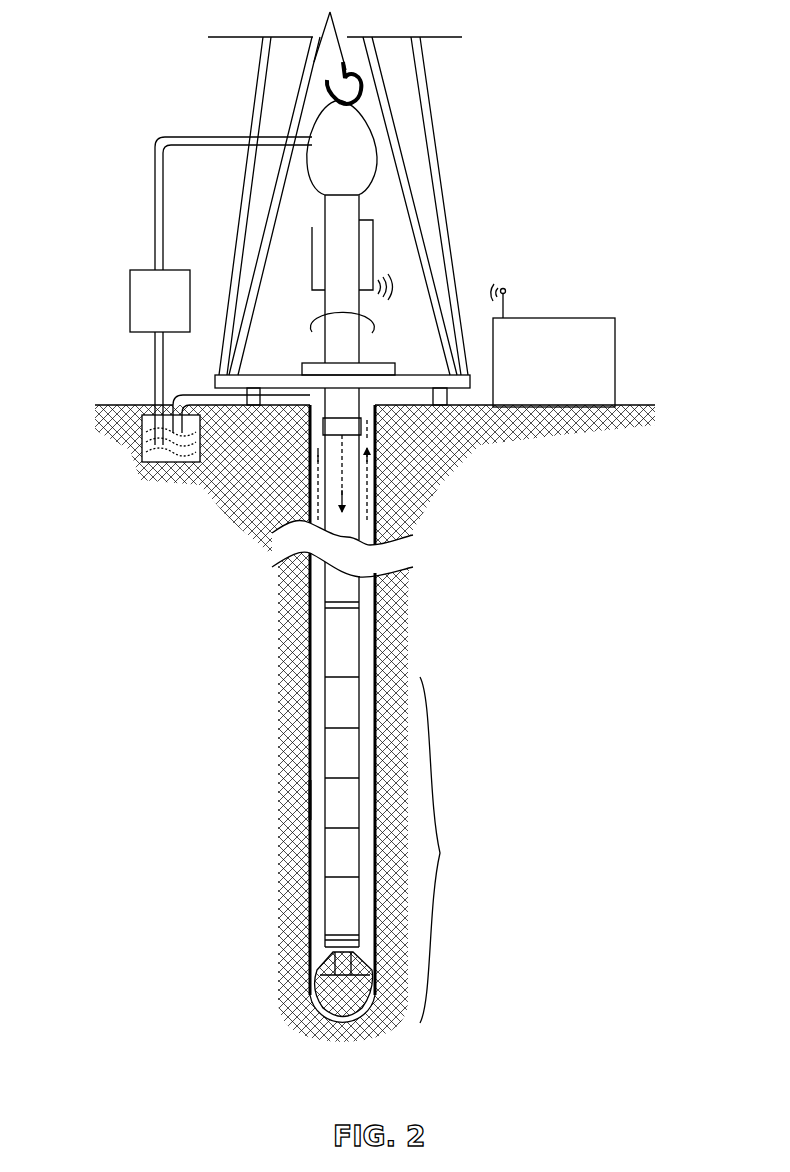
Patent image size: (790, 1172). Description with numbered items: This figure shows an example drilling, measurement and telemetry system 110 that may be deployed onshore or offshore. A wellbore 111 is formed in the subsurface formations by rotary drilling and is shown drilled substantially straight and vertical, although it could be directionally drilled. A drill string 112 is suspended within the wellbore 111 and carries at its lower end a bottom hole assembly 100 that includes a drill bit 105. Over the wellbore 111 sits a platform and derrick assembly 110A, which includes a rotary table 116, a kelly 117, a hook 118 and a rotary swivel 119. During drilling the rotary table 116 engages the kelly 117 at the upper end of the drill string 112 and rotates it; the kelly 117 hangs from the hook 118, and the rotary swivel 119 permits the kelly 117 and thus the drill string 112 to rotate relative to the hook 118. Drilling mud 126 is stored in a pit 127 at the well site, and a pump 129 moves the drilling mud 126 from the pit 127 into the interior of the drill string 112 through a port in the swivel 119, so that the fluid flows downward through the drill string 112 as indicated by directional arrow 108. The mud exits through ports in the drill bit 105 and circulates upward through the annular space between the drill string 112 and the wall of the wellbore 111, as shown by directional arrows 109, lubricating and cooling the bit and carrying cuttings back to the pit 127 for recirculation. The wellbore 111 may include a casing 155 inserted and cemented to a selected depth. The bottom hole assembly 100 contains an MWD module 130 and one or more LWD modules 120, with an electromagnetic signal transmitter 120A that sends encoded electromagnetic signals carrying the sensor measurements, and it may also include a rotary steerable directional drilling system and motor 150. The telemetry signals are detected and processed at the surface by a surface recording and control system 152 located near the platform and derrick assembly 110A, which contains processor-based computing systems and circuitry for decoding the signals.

The bottom hole assembly 100 is at (449, 850).
The drill bit 105 is at (322, 977).
The directional arrow 108 is at (340, 477).
The directional arrows 109 is at (308, 468).
The system 110 is at (448, 116).
The platform and derrick assembly 110A is at (460, 290).
The wellbore 111 is at (374, 405).
The drill string 112 is at (343, 408).
The rotary table 116 is at (382, 320).
The kelly 117 is at (328, 360).
The hook 118 is at (343, 64).
The rotary swivel 119 is at (320, 174).
The LWD module 120 is at (332, 753).
The electromagnetic signal transmitter 120A is at (332, 853).
The drilling mud 126 is at (170, 460).
The pit 127 is at (146, 408).
The pump 129 is at (145, 333).
The MWD module 130 is at (310, 800).
The rotary steerable directional drilling system and motor 150 is at (332, 908).
The surface recording and control system 152 is at (616, 342).
The casing 155 is at (400, 605).